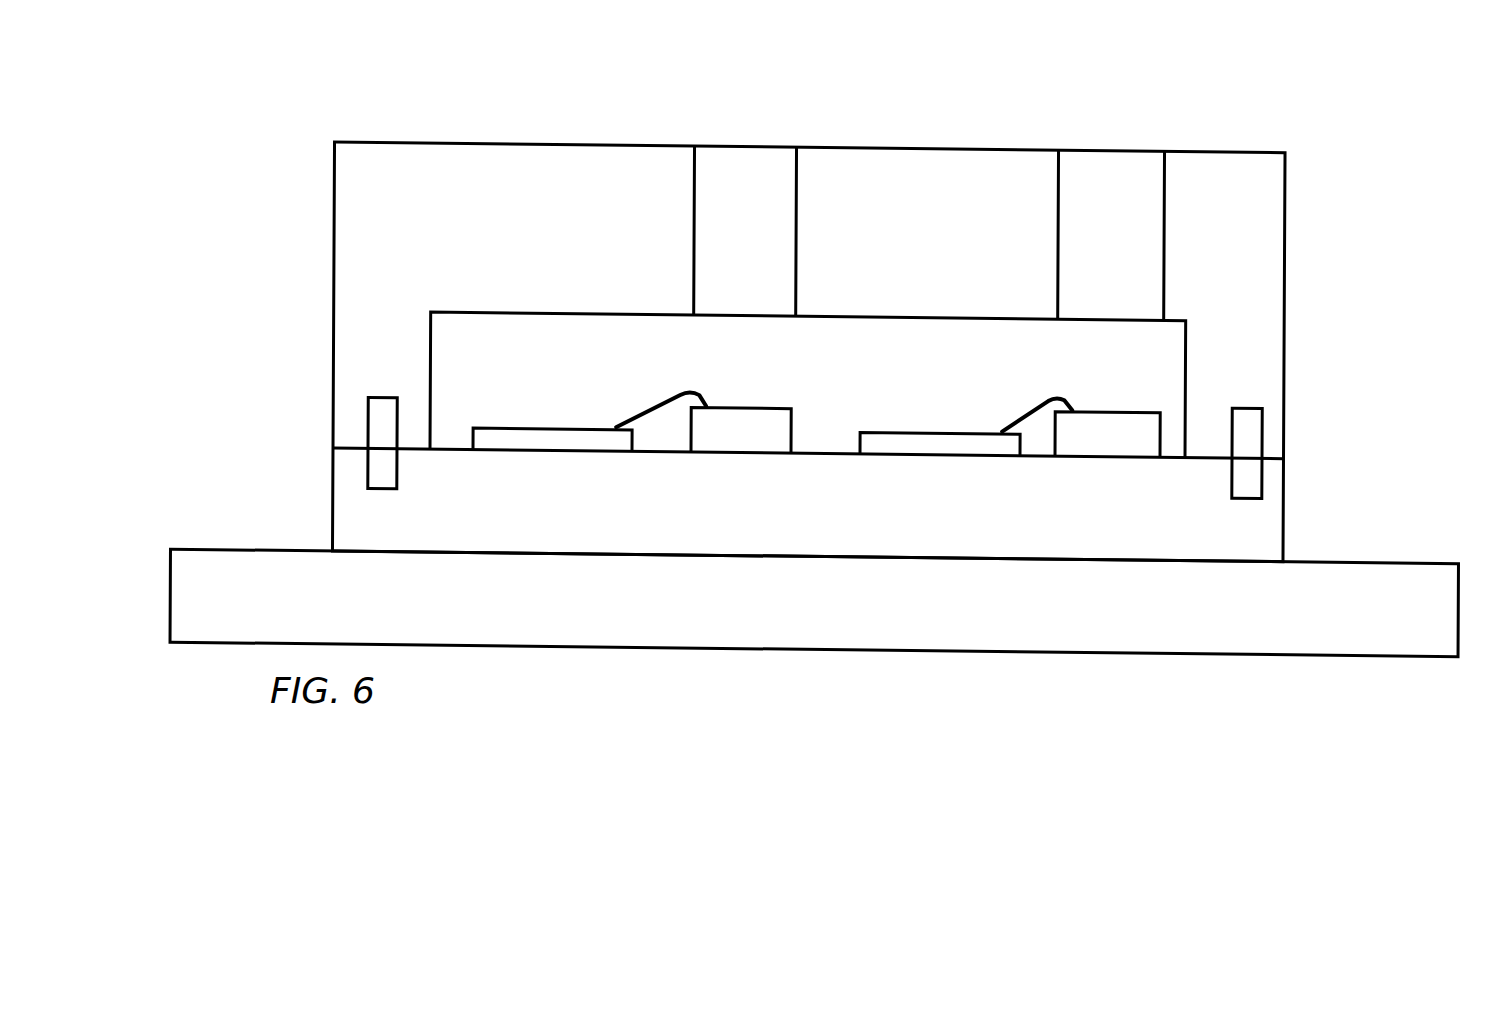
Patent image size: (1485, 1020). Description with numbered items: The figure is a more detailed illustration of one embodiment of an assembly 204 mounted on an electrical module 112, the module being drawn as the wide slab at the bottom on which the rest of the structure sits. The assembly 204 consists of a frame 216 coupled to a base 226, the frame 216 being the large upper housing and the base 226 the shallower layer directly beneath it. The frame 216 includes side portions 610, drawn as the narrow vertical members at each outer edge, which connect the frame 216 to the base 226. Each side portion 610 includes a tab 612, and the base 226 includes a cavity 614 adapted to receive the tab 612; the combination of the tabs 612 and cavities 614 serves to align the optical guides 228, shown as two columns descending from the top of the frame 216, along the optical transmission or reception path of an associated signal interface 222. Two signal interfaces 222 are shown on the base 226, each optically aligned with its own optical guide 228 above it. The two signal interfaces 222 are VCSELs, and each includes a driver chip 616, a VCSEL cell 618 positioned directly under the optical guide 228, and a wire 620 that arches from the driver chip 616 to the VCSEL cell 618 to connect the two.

The assembly 204 is at (774, 319).
The frame 216 is at (380, 181).
The optical guide 228 is at (762, 243).
The base 226 is at (376, 541).
The electrical module 112 is at (1448, 646).
The signal interface 222 is at (816, 444).
The driver chip 616 is at (507, 427).
The VCSEL cell 618 is at (758, 442).
The wire 620 is at (649, 405).
The side portion 610 is at (333, 413).
The tab 612 is at (383, 460).
The cavity 614 is at (367, 478).